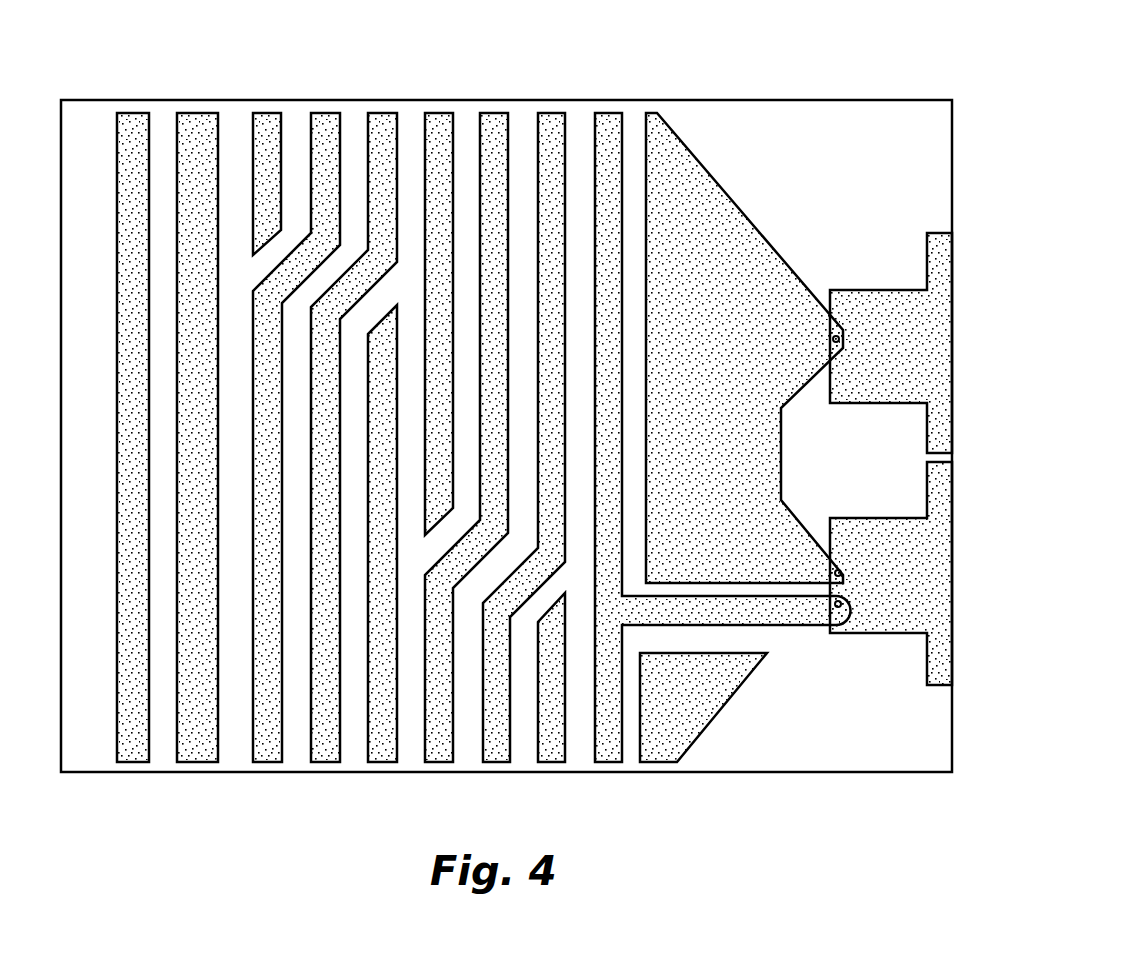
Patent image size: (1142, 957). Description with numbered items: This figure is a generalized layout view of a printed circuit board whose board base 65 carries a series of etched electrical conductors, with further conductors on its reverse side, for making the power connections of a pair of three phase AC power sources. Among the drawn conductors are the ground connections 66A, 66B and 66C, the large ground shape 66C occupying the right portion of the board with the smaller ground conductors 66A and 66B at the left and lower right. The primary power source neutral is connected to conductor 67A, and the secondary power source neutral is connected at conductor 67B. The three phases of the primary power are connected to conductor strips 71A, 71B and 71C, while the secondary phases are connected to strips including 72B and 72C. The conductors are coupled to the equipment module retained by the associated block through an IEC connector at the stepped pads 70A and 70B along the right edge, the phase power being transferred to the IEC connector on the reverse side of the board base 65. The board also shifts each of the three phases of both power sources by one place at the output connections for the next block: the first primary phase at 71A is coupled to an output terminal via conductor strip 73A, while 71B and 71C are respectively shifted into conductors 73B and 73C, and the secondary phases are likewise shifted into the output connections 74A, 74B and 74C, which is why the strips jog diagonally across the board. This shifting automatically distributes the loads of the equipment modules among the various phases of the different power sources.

The board base 65 is at (902, 160).
The ground connection 66A is at (135, 752).
The ground connection 66B is at (705, 687).
The ground connection 66C is at (753, 235).
The primary neutral conductor 67A is at (540, 748).
The secondary neutral conductor 67B is at (197, 751).
The IEC connector 70A is at (932, 578).
The IEC connector 70B is at (927, 340).
The conductor strip 71A is at (392, 752).
The conductor strip 71B is at (495, 748).
The conductor strip 71C is at (442, 748).
The conductor strip 72B is at (323, 751).
The conductor strip 72C is at (272, 751).
The output conductor strip 73A is at (435, 118).
The output conductor strip 73B is at (573, 428).
The output conductor strip 73C is at (500, 428).
The output connection 74A is at (260, 127).
The output connection 74B is at (278, 429).
The output connection 74C is at (345, 429).